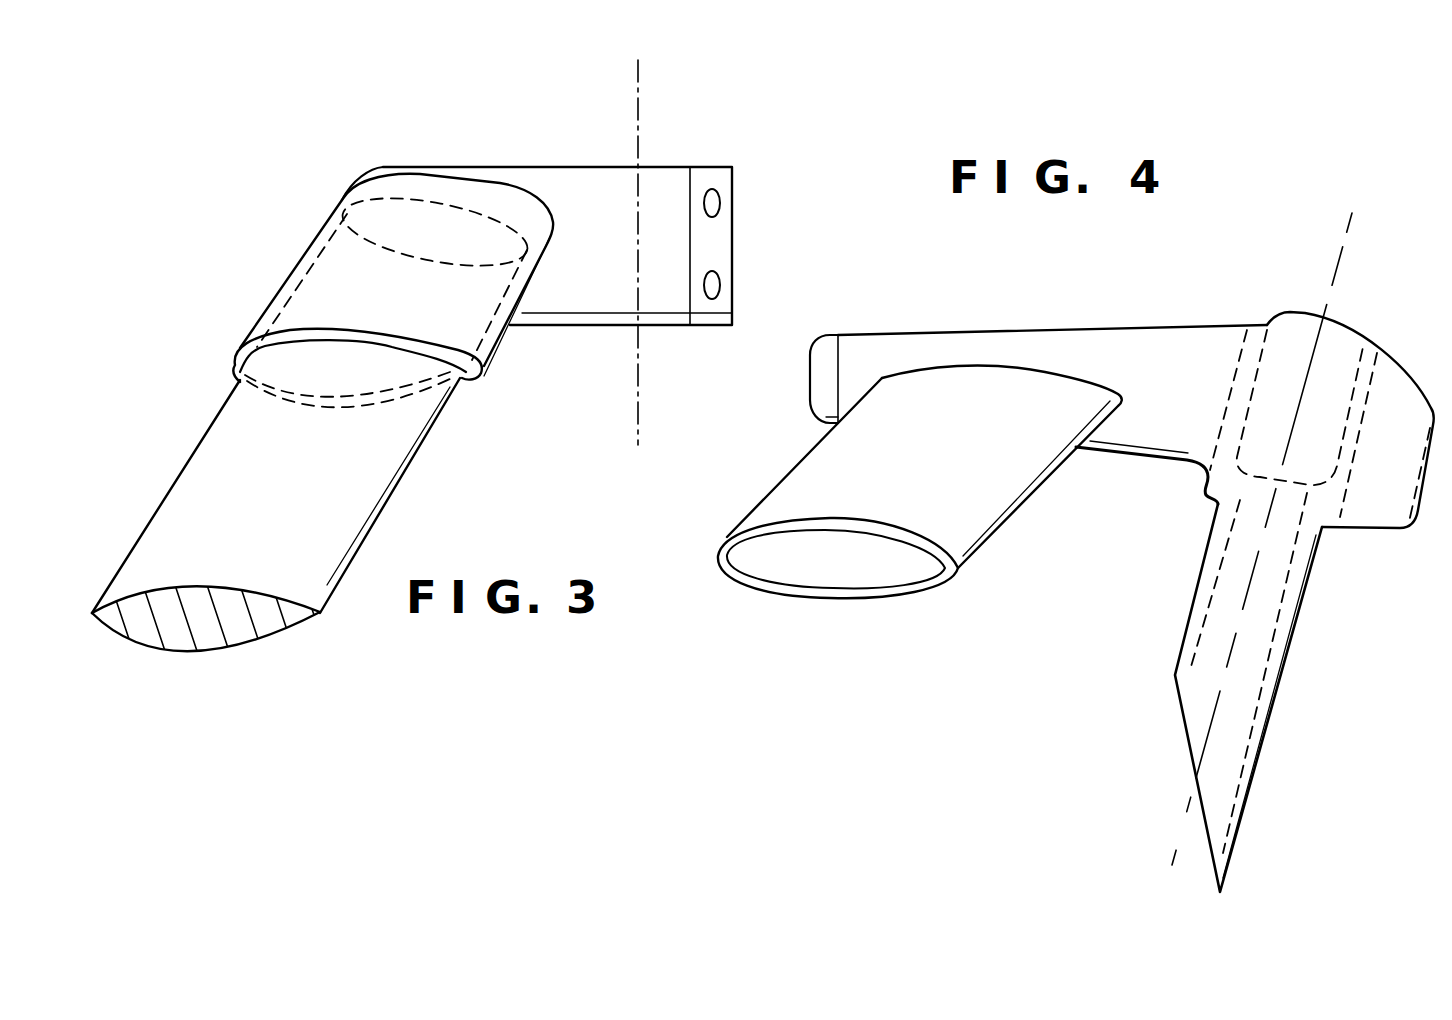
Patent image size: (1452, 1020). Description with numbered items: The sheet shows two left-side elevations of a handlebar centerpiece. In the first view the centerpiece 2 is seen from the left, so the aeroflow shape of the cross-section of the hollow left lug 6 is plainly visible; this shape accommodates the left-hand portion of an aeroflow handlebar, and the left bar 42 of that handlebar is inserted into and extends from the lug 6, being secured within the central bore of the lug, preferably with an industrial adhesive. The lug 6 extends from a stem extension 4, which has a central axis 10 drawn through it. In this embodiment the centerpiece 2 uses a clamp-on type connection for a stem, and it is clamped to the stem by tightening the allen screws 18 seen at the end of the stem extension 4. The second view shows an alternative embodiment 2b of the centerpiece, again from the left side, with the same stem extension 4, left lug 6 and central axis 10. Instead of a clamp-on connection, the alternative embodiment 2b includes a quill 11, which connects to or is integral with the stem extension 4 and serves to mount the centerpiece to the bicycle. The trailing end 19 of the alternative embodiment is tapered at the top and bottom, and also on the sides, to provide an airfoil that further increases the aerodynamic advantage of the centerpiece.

In FIG. 3, the centerpiece 2 is at (449, 135).
In FIG. 4, the alternative embodiment centerpiece 2b is at (1004, 288).
In FIG. 3, the stem extension 4 is at (518, 166).
In FIG. 4, the stem extension 4 is at (1147, 342).
In FIG. 3, the left lug 6 is at (320, 259).
In FIG. 4, the left lug 6 is at (818, 465).
In FIG. 3, the central axis 10 is at (640, 92).
In FIG. 4, the central axis 10 is at (1340, 267).
In FIG. 4, the quill 11 is at (1273, 681).
In FIG. 3, the allen screws 18 is at (721, 206).
In FIG. 4, the trailing end 19 is at (1420, 512).
In FIG. 3, the left bar 42 is at (377, 488).